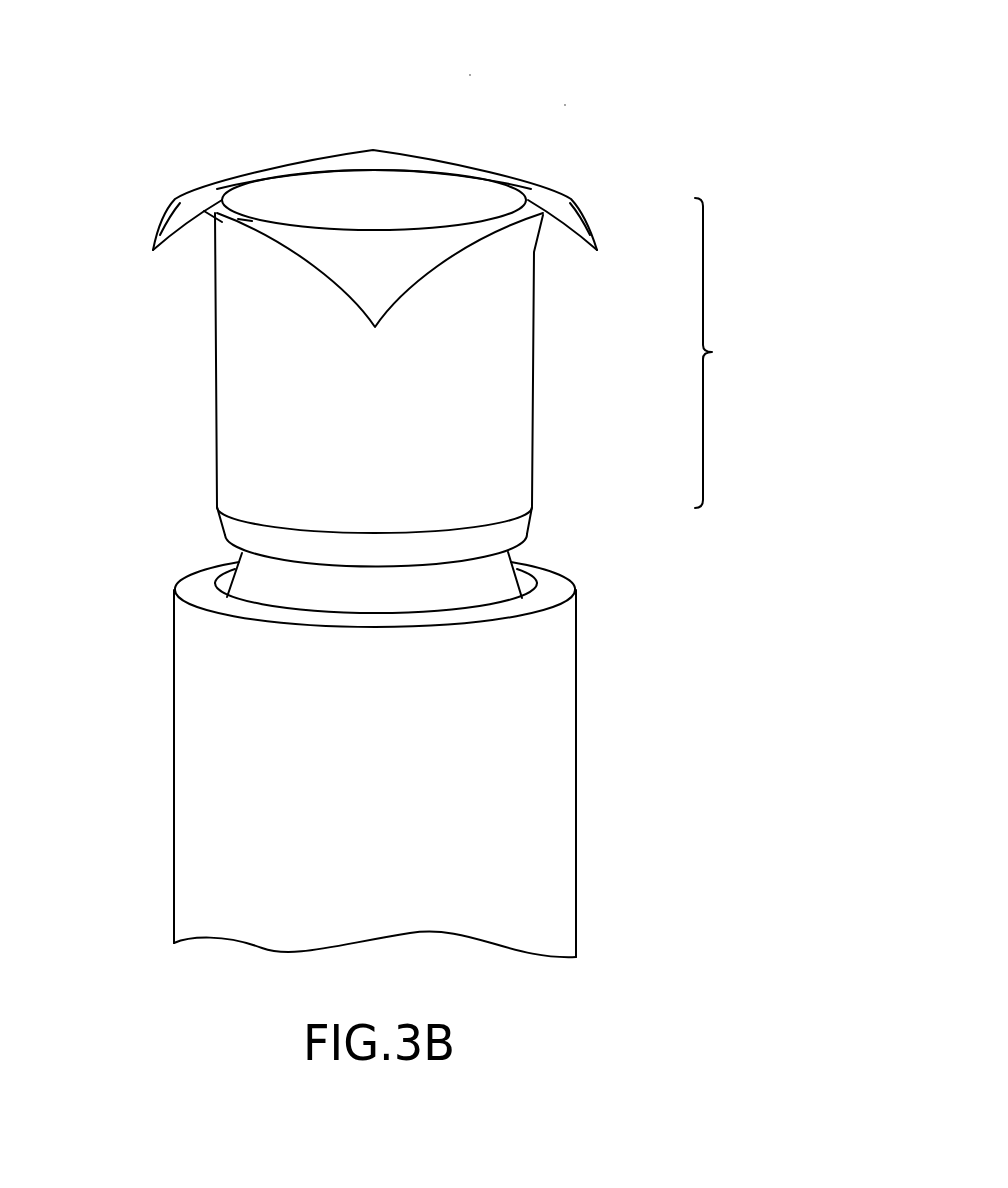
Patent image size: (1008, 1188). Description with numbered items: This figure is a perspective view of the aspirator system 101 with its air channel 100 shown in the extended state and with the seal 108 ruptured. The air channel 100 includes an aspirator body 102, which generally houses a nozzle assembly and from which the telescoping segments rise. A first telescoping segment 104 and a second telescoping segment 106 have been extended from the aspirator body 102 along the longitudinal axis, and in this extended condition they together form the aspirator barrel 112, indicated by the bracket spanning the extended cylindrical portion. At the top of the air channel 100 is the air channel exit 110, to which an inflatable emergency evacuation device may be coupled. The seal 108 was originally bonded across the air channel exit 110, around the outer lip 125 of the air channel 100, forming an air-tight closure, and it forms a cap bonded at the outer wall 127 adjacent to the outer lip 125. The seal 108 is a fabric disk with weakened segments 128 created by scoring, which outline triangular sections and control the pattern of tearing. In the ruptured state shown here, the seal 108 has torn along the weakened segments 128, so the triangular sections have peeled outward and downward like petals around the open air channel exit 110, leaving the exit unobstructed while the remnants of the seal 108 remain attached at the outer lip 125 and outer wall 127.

The air channel 100 is at (569, 103).
The aspirator system 101 is at (473, 67).
The aspirator body 102 is at (573, 753).
The first telescoping segment 104 is at (517, 580).
The second telescoping segment 106 is at (534, 322).
The seal 108 is at (177, 201).
The air channel exit 110 is at (338, 176).
The aspirator barrel 112 is at (724, 353).
The outer lip 125 is at (208, 215).
The outer wall 127 is at (245, 220).
The weakened segments 128 is at (412, 152).